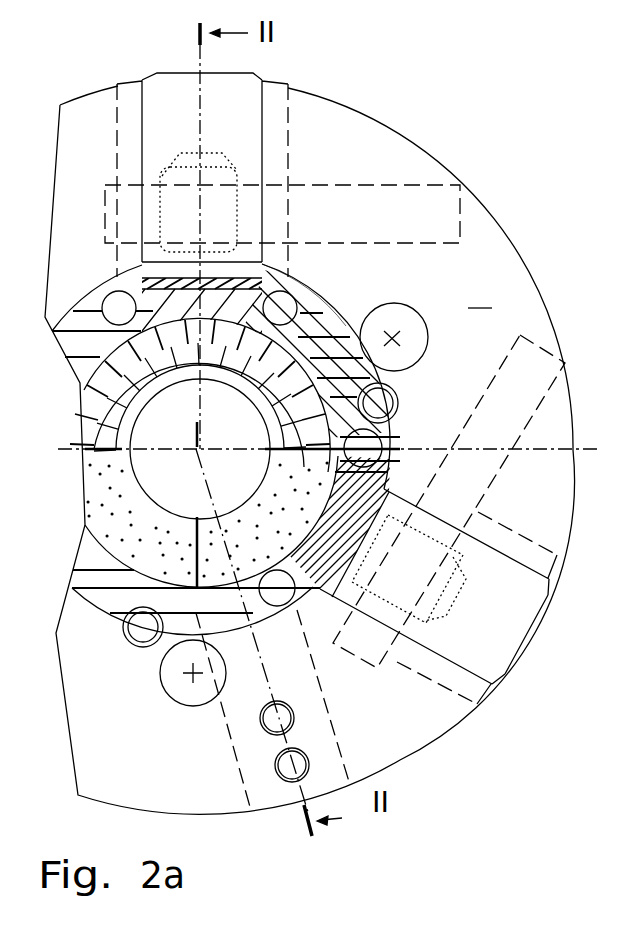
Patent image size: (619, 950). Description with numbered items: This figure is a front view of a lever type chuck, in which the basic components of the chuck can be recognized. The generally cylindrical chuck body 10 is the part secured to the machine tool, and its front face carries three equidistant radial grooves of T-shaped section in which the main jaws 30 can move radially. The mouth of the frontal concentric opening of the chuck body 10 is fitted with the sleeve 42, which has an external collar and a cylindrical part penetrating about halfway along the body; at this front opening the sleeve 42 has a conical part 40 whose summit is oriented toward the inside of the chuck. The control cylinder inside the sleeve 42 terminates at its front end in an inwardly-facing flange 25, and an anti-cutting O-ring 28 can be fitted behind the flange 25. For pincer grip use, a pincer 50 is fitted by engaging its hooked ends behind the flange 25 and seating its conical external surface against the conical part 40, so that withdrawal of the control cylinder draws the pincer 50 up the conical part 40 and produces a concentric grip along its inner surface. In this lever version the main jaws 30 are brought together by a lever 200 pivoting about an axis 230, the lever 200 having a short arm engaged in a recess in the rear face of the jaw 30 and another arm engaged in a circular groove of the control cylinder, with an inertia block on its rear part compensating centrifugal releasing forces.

The chuck body 10 is at (310, 450).
The main jaw 30 is at (200, 206).
The lever 200 is at (215, 177).
The axis 230 is at (418, 230).
The conical part 40 is at (294, 356).
The sleeve 42 is at (313, 310).
The flange 25 is at (370, 378).
The anti-cutting O-ring 28 is at (340, 423).
The pincer 50 is at (84, 598).